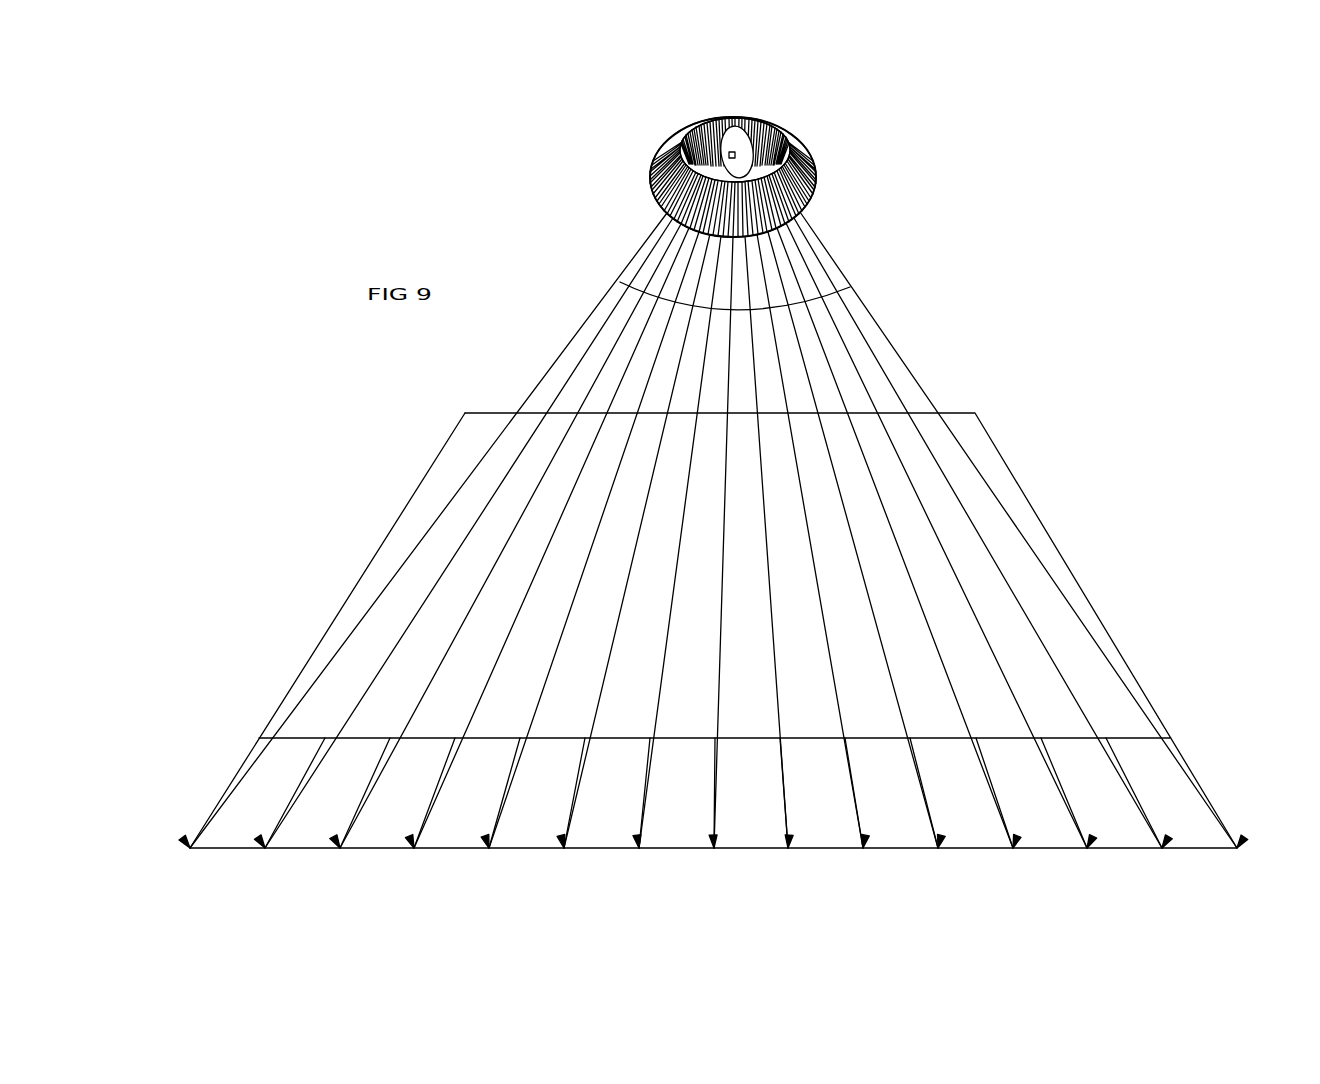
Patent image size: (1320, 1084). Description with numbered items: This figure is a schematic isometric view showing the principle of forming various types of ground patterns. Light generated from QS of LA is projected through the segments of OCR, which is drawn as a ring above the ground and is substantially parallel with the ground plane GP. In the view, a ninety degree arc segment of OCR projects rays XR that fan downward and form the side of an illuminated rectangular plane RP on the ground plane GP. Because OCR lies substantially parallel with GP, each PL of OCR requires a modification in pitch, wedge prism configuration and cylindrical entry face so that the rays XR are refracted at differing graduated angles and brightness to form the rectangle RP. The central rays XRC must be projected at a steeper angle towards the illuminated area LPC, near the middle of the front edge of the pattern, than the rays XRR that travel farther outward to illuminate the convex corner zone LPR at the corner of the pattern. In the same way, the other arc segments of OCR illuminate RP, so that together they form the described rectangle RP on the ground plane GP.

The element QS is at (711, 122).
The element LA is at (753, 143).
The element PL is at (810, 197).
The element OCR is at (716, 155).
The rays XRC is at (732, 347).
The rays XR is at (740, 308).
The rays XRR is at (545, 413).
The ground plane GP is at (1067, 422).
The illuminated rectangular plane RP is at (307, 657).
The convex corner zone LPR is at (247, 823).
The illuminated area LPC is at (673, 820).